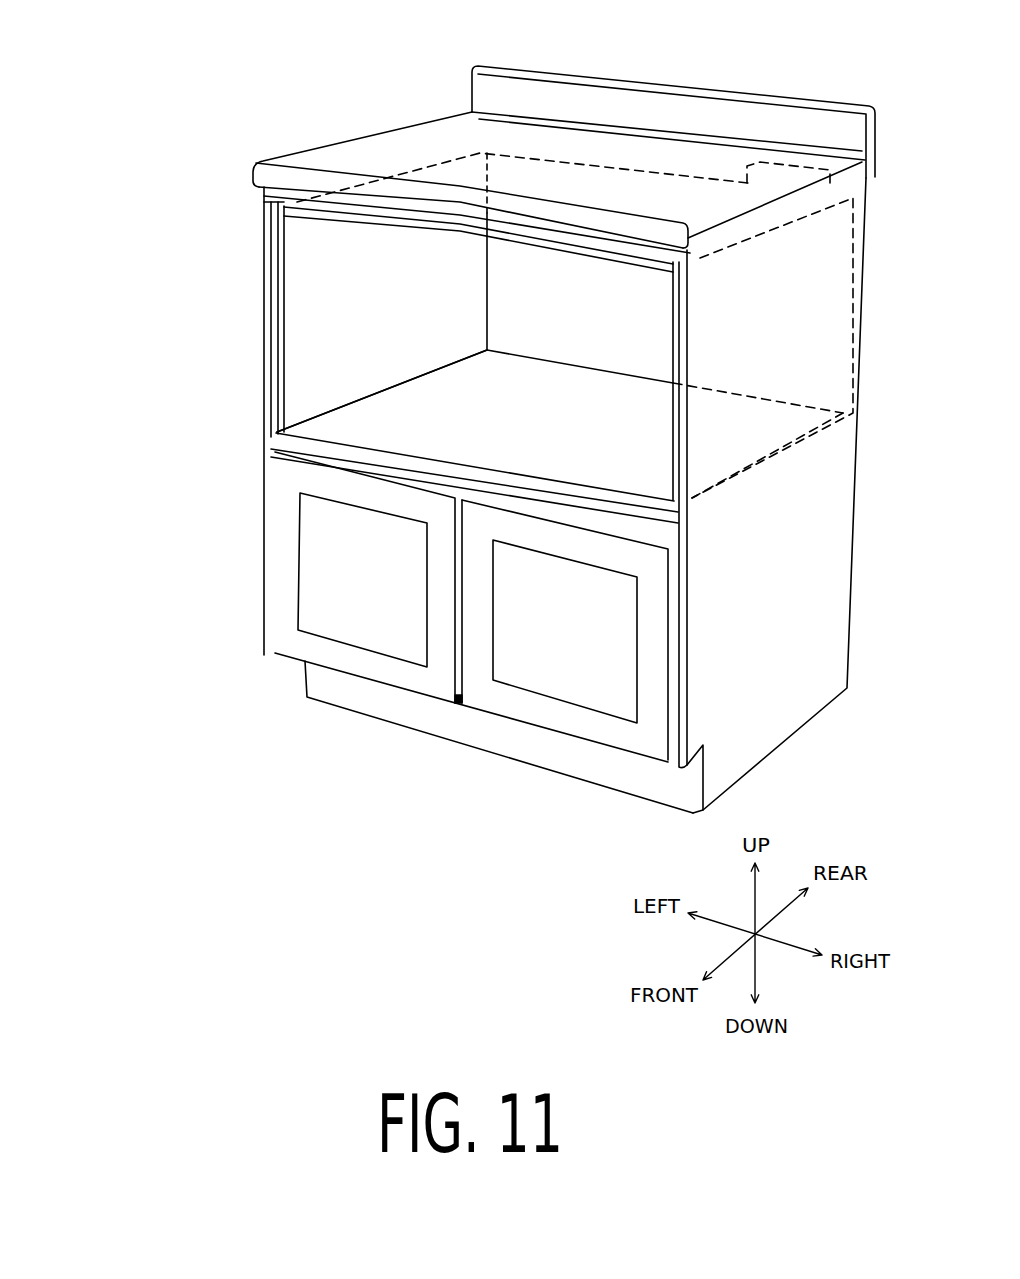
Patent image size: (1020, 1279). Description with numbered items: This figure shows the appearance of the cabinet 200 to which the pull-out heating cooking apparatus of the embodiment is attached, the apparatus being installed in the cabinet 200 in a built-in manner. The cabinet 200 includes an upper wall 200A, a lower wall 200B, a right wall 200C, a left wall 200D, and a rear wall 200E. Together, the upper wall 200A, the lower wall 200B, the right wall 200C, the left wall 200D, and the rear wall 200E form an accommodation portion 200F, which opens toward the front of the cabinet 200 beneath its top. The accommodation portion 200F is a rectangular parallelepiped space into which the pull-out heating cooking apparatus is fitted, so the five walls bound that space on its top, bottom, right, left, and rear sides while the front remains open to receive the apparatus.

The cabinet 200 is at (284, 79).
The upper wall 200A is at (500, 186).
The lower wall 200B is at (347, 423).
The right wall 200C is at (722, 338).
The left wall 200D is at (300, 280).
The rear wall 200E is at (533, 288).
The accommodation portion 200F is at (138, 231).